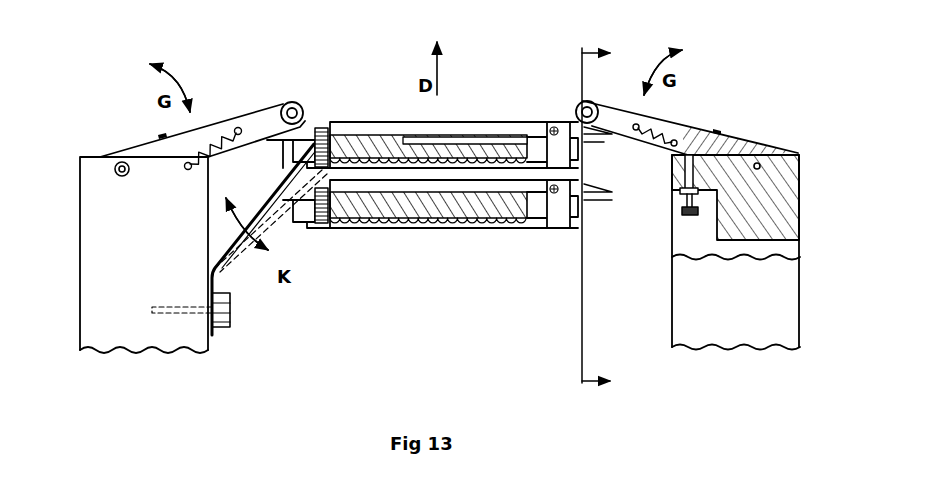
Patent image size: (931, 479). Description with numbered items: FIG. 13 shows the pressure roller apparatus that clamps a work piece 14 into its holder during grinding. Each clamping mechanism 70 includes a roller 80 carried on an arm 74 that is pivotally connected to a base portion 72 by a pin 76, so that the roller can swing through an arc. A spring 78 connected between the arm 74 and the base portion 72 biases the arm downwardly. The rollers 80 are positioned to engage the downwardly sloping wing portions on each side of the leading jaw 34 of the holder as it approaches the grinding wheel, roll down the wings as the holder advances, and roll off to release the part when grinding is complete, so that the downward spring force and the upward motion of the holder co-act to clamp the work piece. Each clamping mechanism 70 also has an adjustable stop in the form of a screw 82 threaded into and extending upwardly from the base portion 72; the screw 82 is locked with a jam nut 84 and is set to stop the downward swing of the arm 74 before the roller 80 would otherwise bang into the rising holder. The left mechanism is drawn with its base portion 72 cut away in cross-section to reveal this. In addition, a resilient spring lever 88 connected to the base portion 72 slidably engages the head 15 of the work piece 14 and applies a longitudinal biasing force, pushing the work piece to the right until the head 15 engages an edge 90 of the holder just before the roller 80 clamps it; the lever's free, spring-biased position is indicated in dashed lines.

The work piece 14 is at (612, 220).
The head of the work piece 15 is at (321, 128).
The leading jaw 34 is at (474, 122).
The clamping mechanism 70 is at (55, 263).
The base portion 72 is at (78, 233).
The arm 74 is at (133, 145).
The pin 76 is at (113, 169).
The spring 78 is at (233, 123).
The roller 80 is at (302, 106).
The screw 82 is at (688, 216).
The jam nut 84 is at (680, 192).
The spring lever 88 is at (284, 170).
The edge of the holder 90 is at (325, 128).